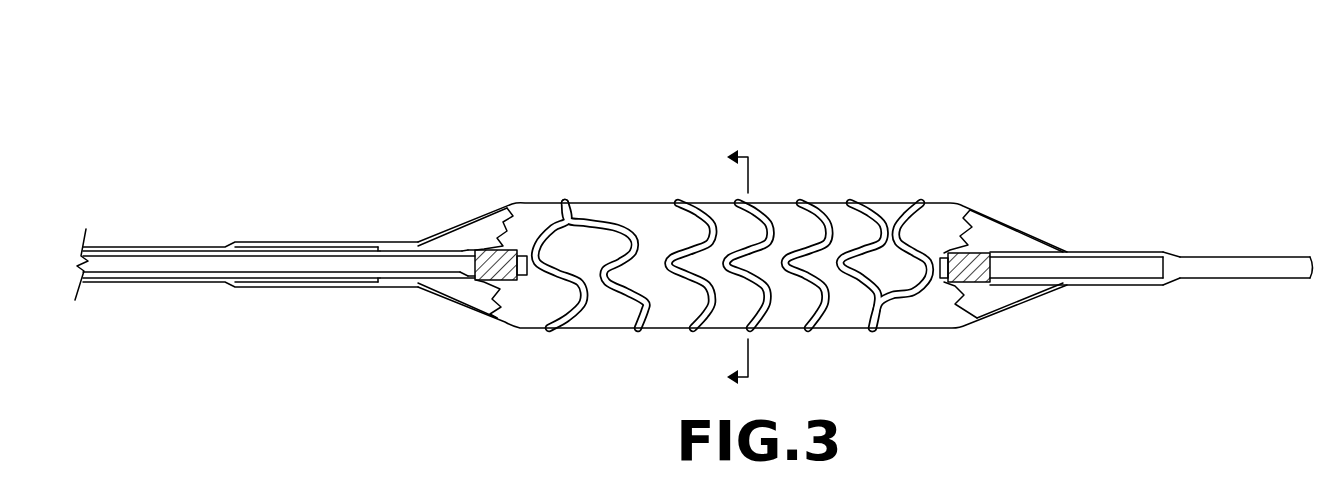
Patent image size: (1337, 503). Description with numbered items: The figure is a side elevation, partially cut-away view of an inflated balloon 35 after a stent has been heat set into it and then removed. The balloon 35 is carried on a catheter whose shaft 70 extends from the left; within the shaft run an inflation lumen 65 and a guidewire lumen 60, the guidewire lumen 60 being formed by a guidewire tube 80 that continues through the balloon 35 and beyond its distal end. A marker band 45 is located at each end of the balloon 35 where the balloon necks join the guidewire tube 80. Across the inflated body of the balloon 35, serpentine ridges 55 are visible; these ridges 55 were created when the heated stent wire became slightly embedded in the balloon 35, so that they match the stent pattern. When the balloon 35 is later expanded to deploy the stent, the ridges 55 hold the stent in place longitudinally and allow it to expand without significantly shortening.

The balloon 35 is at (848, 168).
The marker band 45 is at (495, 250).
The ridges 55 is at (673, 203).
The guidewire lumen 60 is at (262, 257).
The inflation lumen 65 is at (167, 249).
The shaft 70 is at (105, 246).
The guidewire tube 80 is at (407, 251).